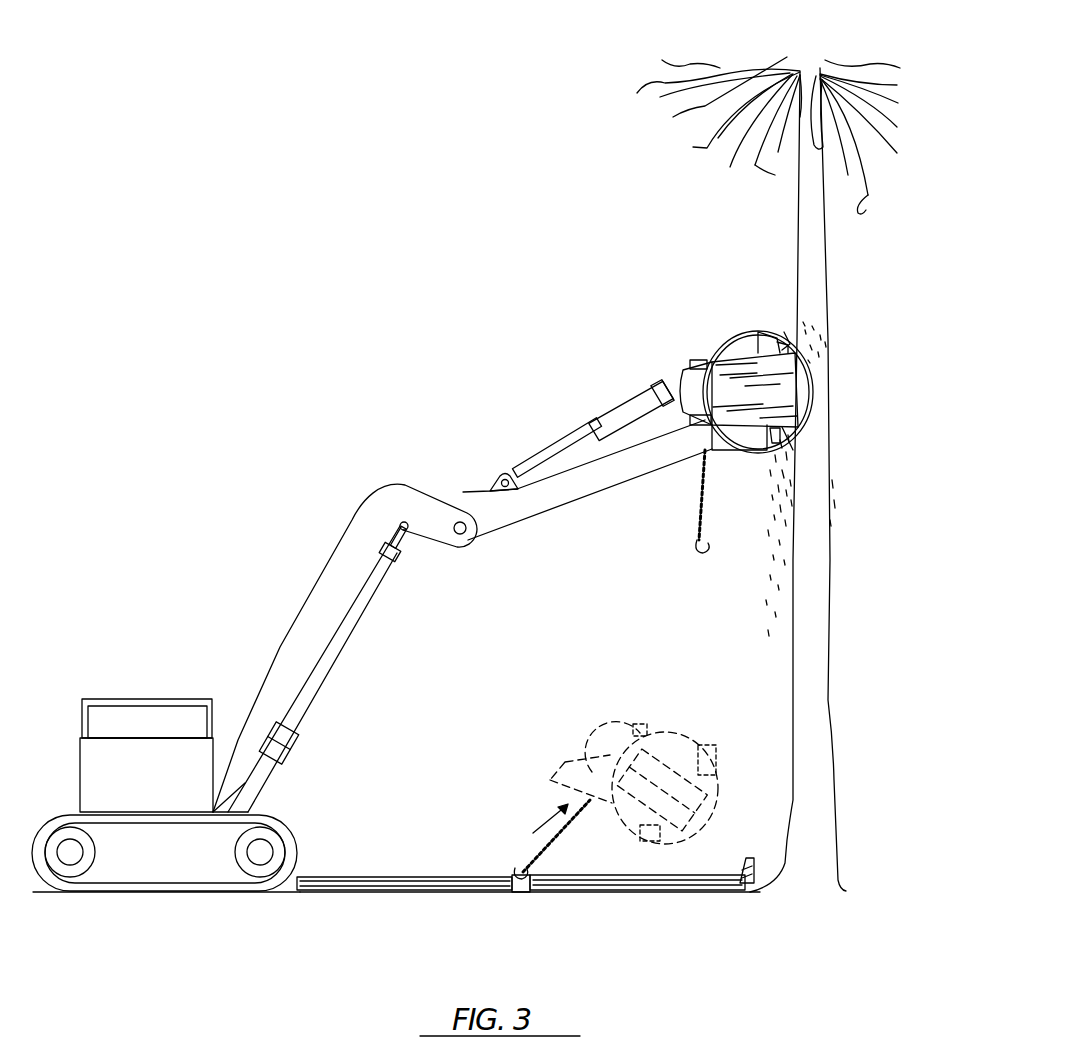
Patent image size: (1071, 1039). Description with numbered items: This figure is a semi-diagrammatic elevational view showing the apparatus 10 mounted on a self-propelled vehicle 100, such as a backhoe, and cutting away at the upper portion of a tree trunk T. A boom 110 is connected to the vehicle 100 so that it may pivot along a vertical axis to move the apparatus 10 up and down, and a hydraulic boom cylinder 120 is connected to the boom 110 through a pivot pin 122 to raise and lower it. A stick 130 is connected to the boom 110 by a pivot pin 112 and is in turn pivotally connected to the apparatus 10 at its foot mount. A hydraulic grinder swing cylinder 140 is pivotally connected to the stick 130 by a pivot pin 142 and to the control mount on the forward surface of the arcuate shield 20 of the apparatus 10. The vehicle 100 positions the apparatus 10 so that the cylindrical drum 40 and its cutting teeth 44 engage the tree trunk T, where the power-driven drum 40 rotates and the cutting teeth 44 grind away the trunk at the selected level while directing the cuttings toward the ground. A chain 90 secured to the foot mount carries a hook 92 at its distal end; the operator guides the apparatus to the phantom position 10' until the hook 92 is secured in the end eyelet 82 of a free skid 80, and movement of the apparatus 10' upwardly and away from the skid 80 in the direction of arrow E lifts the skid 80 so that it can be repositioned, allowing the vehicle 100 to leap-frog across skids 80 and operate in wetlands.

The apparatus 10 is at (740, 369).
The phantom position of apparatus 10' is at (636, 751).
The arcuate shield 20 is at (744, 452).
The cylindrical drum 40 is at (779, 335).
The cutting teeth 44 is at (788, 340).
The skid 80 is at (362, 878).
The end eyelet 82 is at (520, 893).
The chain 90 is at (700, 492).
The hook 92 is at (710, 552).
The self-propelled vehicle 100 is at (145, 680).
The boom 110 is at (350, 540).
The pivot pin 112 is at (466, 541).
The hydraulic boom cylinder 120 is at (323, 688).
The pivot pin 122 is at (407, 545).
The stick 130 is at (568, 505).
The hydraulic grinder swing cylinder 140 is at (546, 455).
The pivot pin 142 is at (507, 474).
The tree trunk T is at (798, 233).
The arrow E is at (550, 816).